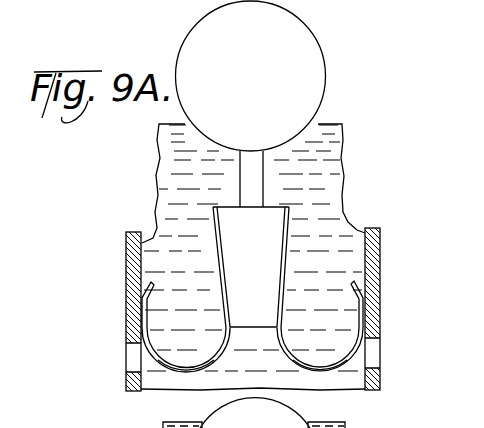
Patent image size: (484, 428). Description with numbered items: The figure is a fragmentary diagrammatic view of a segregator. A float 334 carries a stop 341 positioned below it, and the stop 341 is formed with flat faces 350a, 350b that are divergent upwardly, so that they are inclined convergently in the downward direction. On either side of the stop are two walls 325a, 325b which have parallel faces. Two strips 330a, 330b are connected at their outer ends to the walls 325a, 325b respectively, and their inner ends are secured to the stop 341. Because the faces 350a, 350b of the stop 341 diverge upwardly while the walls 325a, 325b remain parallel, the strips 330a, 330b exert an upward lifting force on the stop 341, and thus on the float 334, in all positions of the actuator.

The float 334 is at (310, 76).
The wall 325a is at (125, 291).
The wall 325b is at (391, 240).
The stop 341 is at (276, 254).
The flat face 350a is at (224, 270).
The flat face 350b is at (278, 290).
The strip 330a is at (167, 371).
The strip 330b is at (325, 372).